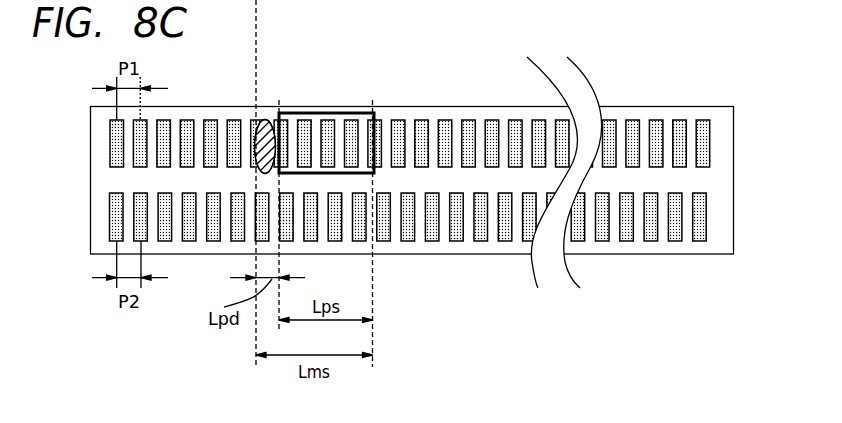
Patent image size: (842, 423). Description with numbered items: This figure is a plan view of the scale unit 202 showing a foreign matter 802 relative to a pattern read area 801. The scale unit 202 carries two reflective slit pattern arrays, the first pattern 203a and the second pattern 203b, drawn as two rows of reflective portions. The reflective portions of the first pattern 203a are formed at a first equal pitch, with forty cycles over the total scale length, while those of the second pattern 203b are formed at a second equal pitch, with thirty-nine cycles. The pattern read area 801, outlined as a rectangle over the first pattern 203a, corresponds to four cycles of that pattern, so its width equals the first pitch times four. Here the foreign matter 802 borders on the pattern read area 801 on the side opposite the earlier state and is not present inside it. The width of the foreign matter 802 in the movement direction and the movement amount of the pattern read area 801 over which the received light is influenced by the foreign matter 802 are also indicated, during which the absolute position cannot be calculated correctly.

The scale unit 202 is at (452, 107).
The first pattern 203a is at (709, 143).
The second pattern 203b is at (709, 216).
The pattern read area 801 is at (338, 112).
The foreign matter 802 is at (262, 121).